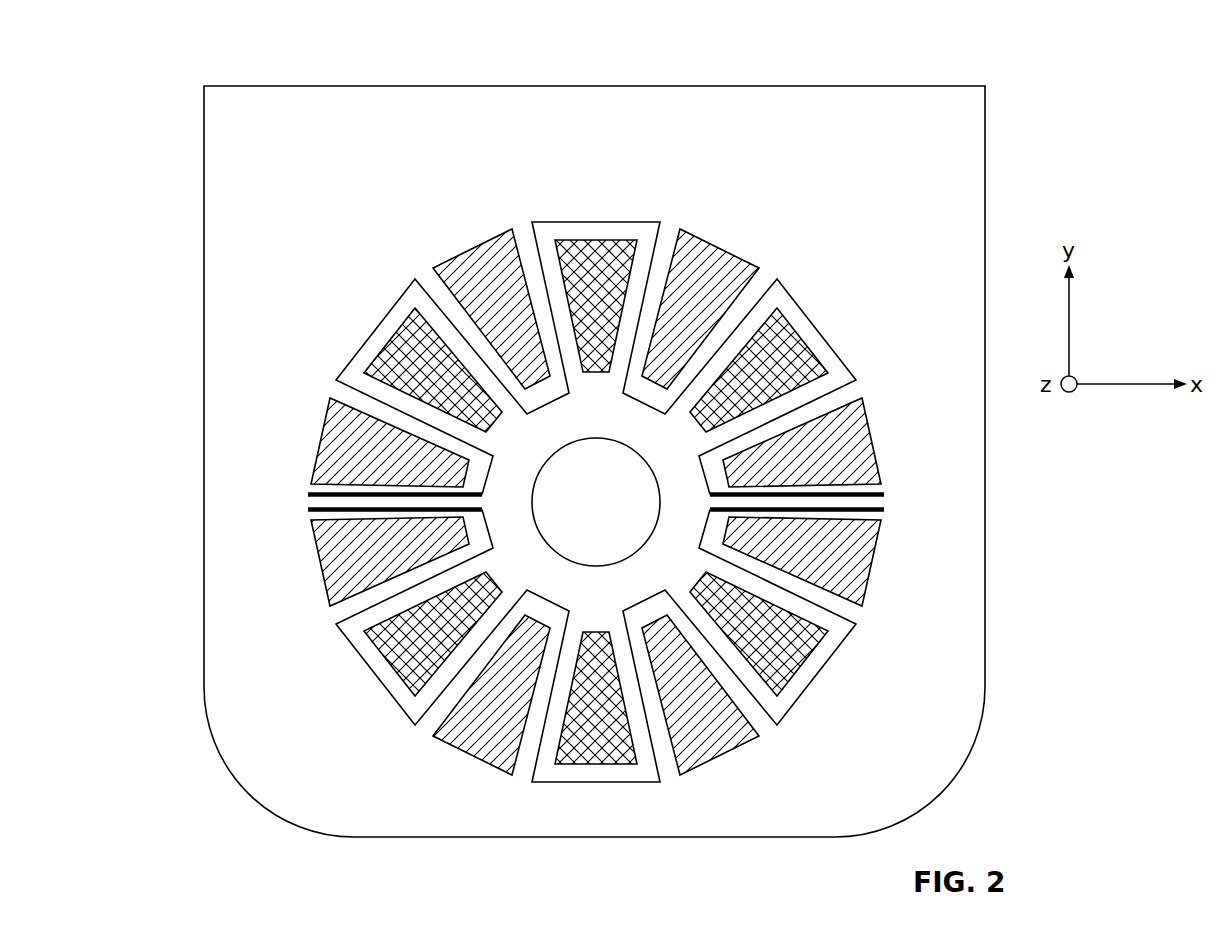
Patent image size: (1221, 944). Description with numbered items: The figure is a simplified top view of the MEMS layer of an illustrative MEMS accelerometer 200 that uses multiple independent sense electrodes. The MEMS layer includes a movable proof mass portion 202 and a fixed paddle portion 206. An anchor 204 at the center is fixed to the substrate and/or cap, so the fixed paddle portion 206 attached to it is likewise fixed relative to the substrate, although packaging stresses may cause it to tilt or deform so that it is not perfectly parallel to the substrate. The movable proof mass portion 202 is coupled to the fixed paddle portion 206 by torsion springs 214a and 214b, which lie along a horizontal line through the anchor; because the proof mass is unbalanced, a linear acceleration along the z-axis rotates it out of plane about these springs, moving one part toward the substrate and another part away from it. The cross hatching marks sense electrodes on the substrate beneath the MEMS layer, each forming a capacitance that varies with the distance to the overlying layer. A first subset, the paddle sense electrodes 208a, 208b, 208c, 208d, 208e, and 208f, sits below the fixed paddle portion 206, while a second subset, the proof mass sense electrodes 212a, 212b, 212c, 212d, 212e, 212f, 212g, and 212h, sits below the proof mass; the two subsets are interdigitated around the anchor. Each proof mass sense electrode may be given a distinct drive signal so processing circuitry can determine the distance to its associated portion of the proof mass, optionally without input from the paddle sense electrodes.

The MEMS accelerometer 200 is at (236, 58).
The movable proof mass portion 202 is at (280, 219).
The anchor 204 is at (619, 516).
The fixed paddle portion 206 is at (619, 607).
The paddle sense electrode 208a is at (400, 340).
The paddle sense electrode 208b is at (593, 250).
The paddle sense electrode 208c is at (810, 352).
The paddle sense electrode 208d is at (810, 652).
The paddle sense electrode 208e is at (593, 758).
The paddle sense electrode 208f is at (396, 670).
The proof mass sense electrode 212a is at (330, 440).
The proof mass sense electrode 212b is at (476, 258).
The proof mass sense electrode 212c is at (713, 255).
The proof mass sense electrode 212d is at (865, 452).
The proof mass sense electrode 212e is at (860, 548).
The proof mass sense electrode 212f is at (718, 752).
The proof mass sense electrode 212g is at (478, 752).
The proof mass sense electrode 212h is at (335, 548).
The torsion spring 214a is at (883, 505).
The torsion spring 214b is at (310, 500).